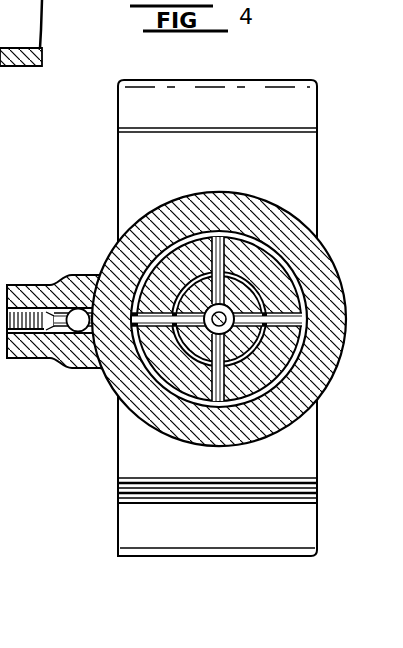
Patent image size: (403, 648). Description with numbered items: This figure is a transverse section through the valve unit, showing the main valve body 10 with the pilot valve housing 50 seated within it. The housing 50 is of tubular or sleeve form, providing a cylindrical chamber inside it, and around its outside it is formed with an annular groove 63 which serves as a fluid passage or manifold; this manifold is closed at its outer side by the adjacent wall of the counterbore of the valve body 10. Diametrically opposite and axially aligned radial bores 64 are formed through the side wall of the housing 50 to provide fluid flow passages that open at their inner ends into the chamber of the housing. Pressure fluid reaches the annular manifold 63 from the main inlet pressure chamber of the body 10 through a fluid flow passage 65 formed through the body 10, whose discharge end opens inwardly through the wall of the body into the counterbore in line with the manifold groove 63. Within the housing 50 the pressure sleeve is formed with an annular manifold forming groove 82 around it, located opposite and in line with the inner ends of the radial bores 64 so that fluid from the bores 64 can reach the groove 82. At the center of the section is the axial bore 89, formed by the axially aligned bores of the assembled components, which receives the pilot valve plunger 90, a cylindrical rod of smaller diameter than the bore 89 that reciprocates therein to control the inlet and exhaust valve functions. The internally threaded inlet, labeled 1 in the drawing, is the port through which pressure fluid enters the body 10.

The housing body 1 is at (190, 334).
The main valve body 10 is at (183, 78).
The housing 50 is at (163, 360).
The annular groove 63 is at (295, 358).
The radial bores 64 is at (152, 322).
The fluid flow passage 65 is at (77, 326).
The annular manifold forming groove 82 is at (255, 288).
The axial bore 89 is at (228, 313).
The pilot valve plunger 90 is at (220, 306).